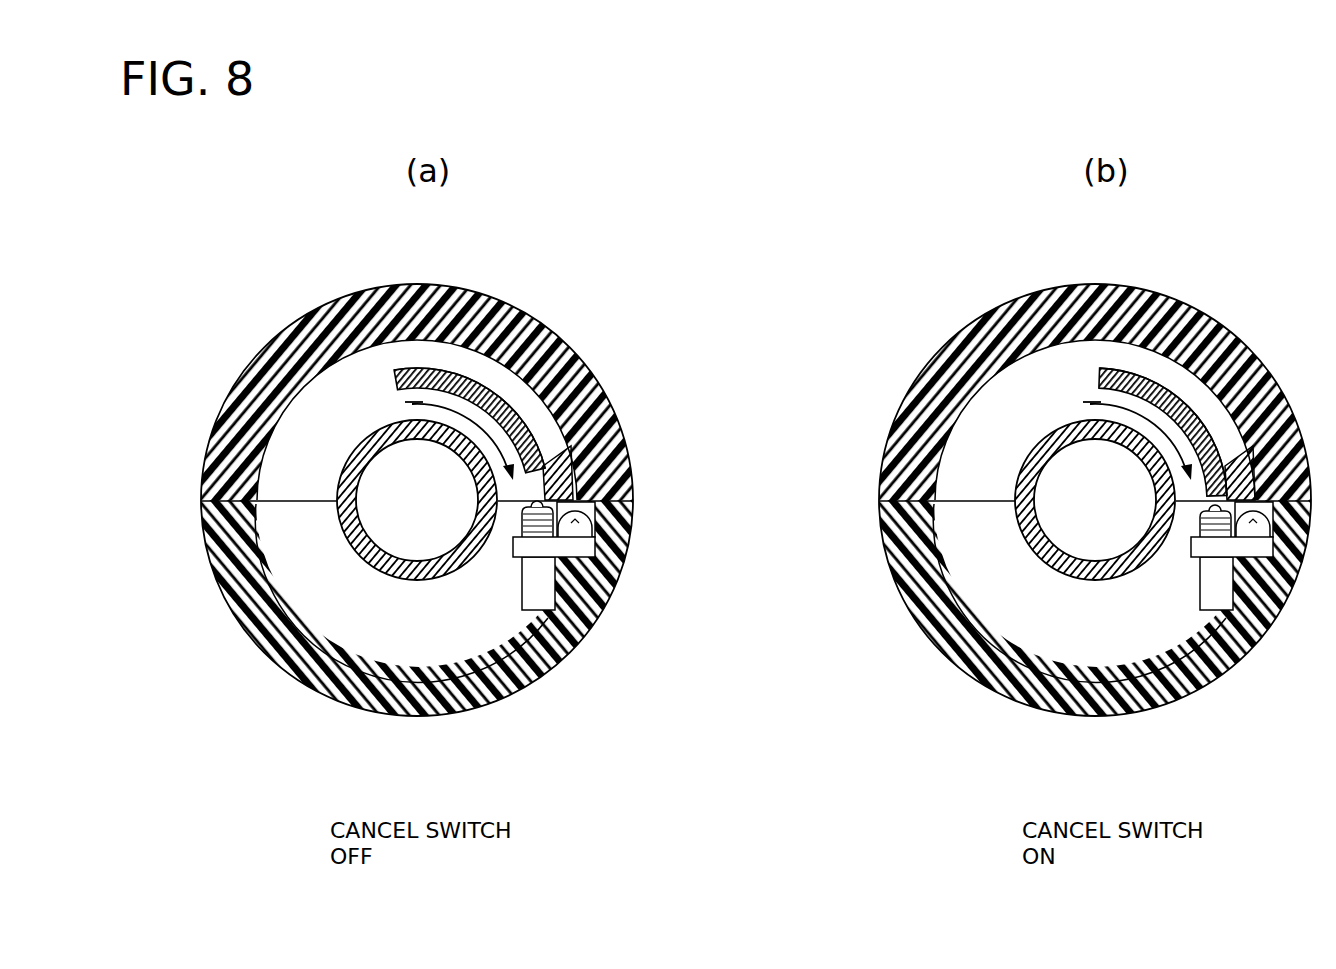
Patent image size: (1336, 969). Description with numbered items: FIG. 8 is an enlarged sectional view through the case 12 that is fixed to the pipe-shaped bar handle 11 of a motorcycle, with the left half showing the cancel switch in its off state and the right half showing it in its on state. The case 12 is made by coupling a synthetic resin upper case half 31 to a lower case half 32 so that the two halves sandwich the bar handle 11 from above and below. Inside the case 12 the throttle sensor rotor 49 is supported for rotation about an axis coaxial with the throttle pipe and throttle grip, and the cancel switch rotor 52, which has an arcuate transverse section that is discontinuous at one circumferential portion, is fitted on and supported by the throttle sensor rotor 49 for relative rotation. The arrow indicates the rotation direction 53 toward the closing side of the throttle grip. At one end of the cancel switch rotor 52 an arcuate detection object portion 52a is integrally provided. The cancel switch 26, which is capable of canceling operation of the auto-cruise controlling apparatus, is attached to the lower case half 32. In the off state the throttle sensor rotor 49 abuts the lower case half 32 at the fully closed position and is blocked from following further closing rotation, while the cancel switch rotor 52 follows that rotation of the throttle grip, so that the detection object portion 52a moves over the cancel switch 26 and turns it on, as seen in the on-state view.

The bar handle 11 is at (388, 548).
The case 12 is at (729, 533).
The cancel switch 26 is at (535, 586).
The upper case half 31 is at (204, 484).
The lower case half 32 is at (268, 648).
The throttle sensor rotor 49 is at (557, 447).
The cancel switch rotor 52 is at (466, 376).
The detection object portion 52a is at (490, 390).
The rotation direction 53 is at (423, 402).